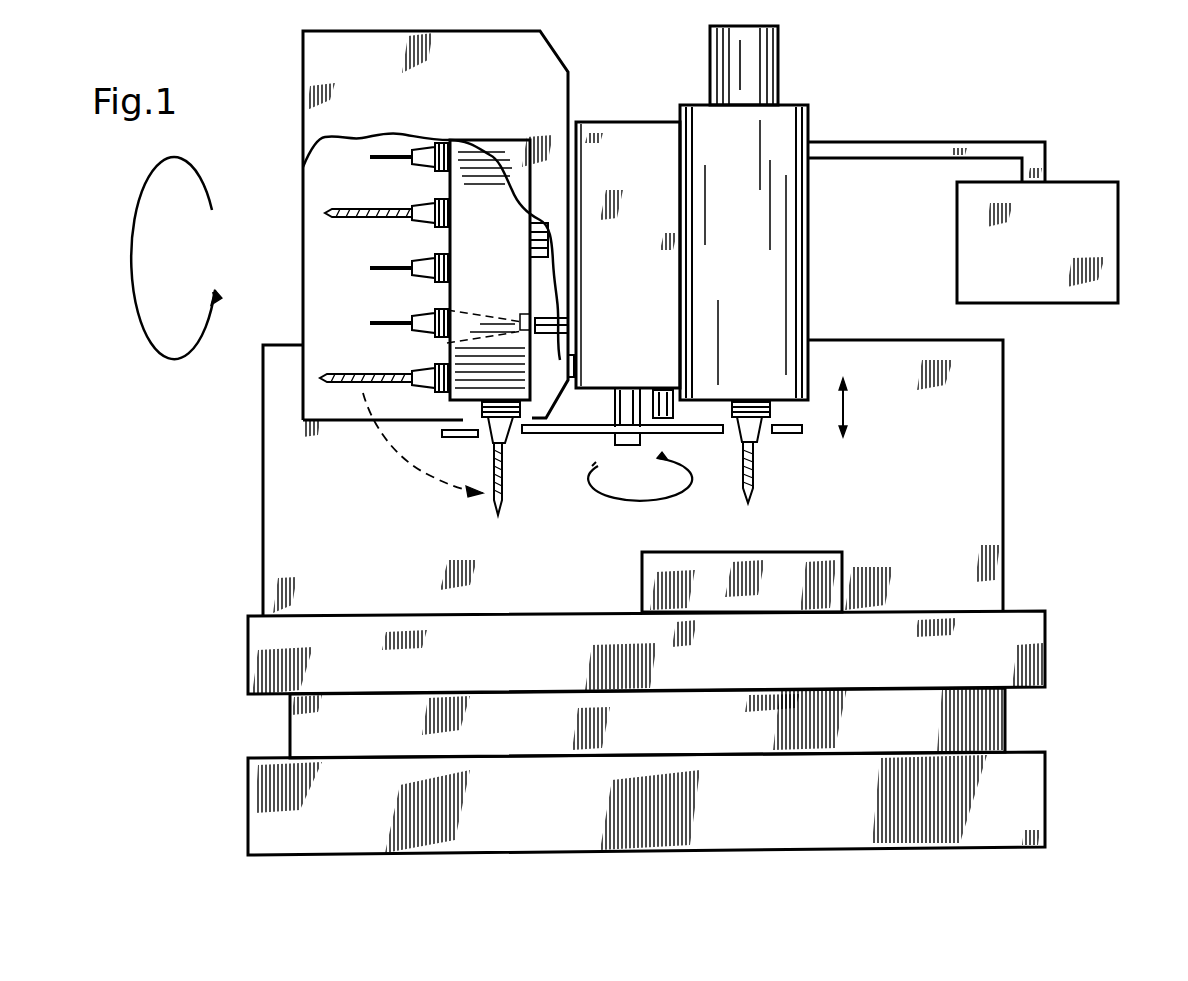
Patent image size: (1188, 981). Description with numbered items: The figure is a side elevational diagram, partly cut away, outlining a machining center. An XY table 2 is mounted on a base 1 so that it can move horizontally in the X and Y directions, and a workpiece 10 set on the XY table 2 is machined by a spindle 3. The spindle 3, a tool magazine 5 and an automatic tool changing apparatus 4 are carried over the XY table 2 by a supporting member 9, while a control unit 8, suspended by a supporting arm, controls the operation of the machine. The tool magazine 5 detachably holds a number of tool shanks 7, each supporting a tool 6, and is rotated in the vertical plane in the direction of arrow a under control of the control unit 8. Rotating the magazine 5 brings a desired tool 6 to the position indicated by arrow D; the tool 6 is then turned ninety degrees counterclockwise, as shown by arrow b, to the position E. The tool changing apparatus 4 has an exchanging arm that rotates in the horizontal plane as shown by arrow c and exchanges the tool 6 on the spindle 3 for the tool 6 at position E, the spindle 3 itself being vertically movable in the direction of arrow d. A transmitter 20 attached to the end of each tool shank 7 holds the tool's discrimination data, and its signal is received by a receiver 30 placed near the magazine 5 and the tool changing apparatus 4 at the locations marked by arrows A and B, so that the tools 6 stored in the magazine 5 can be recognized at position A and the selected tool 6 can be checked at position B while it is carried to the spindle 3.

The base 1 is at (1007, 718).
The XY table 2 is at (1047, 650).
The spindle 3 is at (810, 304).
The automatic tool changing apparatus 4 is at (586, 443).
The tool magazine 5 is at (487, 203).
The tool 6 is at (372, 322).
The tool shank 7 is at (422, 313).
The control unit 8 is at (1120, 262).
The supporting member 9 is at (1004, 408).
The workpiece 10 is at (825, 552).
The transmitter 20 is at (523, 318).
The receiver 30 is at (567, 326).
The receiver position A is at (556, 312).
The receiver position B is at (665, 413).
The tool selection position D is at (320, 383).
The tool exchange position E is at (497, 520).
The magazine rotation direction a is at (215, 172).
The tool rotation direction b is at (413, 463).
The exchanging arm rotation direction c is at (635, 497).
The spindle vertical movement direction d is at (843, 408).